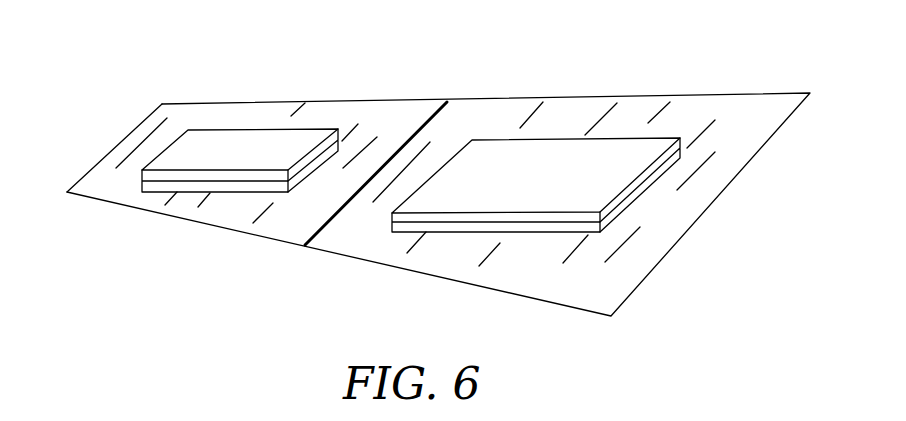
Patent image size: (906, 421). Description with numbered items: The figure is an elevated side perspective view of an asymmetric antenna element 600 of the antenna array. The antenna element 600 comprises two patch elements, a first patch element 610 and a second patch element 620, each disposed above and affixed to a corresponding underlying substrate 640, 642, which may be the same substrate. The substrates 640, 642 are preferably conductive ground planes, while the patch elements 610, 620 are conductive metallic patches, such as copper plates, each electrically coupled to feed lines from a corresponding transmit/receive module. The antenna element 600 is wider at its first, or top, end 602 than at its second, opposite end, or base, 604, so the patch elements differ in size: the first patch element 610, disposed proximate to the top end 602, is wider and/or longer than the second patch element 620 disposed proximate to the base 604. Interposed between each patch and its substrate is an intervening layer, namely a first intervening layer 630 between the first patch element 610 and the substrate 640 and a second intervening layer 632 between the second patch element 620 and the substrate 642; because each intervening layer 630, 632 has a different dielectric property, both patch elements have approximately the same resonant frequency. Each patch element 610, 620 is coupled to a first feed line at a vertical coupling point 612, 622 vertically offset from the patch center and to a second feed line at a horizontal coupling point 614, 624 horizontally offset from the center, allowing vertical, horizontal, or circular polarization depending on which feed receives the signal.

The asymmetric antenna element 600 is at (117, 38).
The top end 602 is at (697, 220).
The base 604 is at (114, 148).
The first patch element 610 is at (536, 146).
The vertical coupling point 612 is at (488, 175).
The horizontal coupling point 614 is at (558, 155).
The second patch element 620 is at (240, 143).
The vertical coupling point 622 is at (194, 157).
The horizontal coupling point 624 is at (303, 151).
The first intervening layer 630 is at (651, 179).
The second intervening layer 632 is at (310, 160).
The substrate 640 is at (769, 125).
The substrate 642 is at (416, 125).